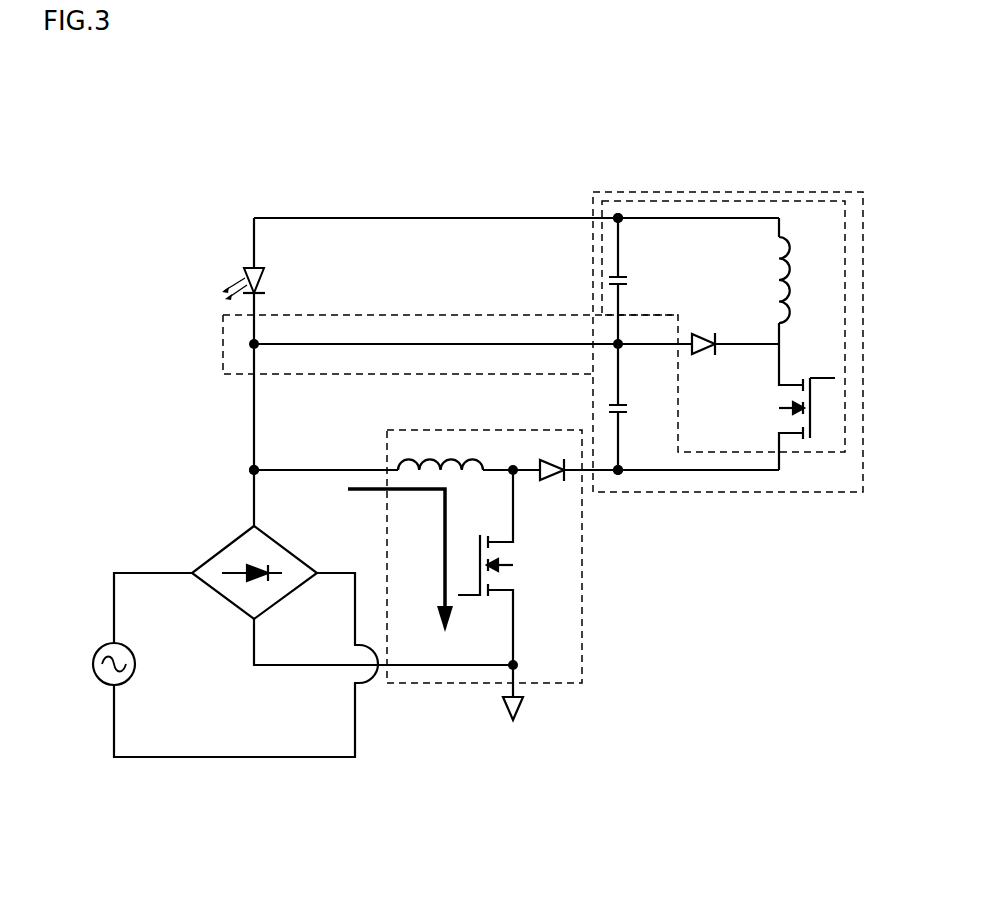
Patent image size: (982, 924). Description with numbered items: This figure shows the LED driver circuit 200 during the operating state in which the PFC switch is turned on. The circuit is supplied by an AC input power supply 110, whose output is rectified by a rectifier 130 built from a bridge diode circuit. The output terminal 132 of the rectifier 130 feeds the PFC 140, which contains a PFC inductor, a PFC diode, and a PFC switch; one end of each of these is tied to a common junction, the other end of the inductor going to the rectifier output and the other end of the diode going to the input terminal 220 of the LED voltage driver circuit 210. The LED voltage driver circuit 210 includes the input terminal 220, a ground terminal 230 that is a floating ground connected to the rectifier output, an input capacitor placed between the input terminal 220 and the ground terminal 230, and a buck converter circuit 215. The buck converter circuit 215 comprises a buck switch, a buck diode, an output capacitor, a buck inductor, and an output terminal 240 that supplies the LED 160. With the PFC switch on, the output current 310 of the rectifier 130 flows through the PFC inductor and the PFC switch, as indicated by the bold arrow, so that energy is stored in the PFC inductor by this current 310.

The LED driver circuit 200 is at (122, 116).
The LED 160 is at (239, 264).
The ground terminal 230 is at (250, 344).
The output terminal of the rectifier 132 is at (250, 470).
The rectifier 130 is at (203, 563).
The input power supply 110 is at (105, 647).
The output terminal 240 is at (618, 213).
The LED voltage driver circuit 210 is at (714, 191).
The buck converter circuit 215 is at (815, 200).
The input terminal 220 is at (618, 476).
The PFC 140 is at (583, 645).
The output current 310 is at (442, 583).